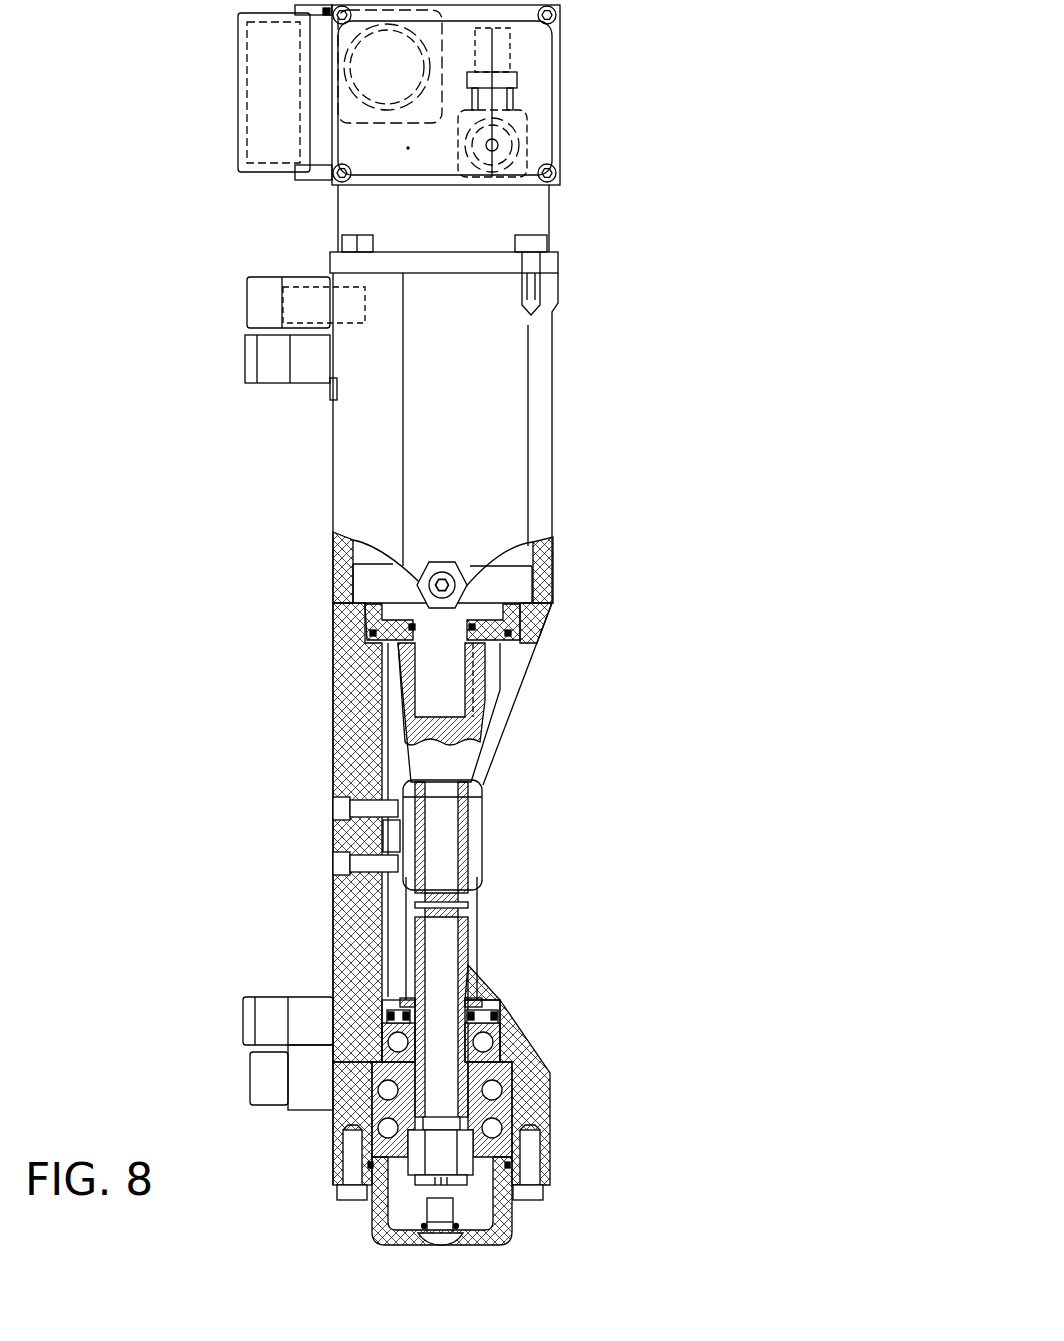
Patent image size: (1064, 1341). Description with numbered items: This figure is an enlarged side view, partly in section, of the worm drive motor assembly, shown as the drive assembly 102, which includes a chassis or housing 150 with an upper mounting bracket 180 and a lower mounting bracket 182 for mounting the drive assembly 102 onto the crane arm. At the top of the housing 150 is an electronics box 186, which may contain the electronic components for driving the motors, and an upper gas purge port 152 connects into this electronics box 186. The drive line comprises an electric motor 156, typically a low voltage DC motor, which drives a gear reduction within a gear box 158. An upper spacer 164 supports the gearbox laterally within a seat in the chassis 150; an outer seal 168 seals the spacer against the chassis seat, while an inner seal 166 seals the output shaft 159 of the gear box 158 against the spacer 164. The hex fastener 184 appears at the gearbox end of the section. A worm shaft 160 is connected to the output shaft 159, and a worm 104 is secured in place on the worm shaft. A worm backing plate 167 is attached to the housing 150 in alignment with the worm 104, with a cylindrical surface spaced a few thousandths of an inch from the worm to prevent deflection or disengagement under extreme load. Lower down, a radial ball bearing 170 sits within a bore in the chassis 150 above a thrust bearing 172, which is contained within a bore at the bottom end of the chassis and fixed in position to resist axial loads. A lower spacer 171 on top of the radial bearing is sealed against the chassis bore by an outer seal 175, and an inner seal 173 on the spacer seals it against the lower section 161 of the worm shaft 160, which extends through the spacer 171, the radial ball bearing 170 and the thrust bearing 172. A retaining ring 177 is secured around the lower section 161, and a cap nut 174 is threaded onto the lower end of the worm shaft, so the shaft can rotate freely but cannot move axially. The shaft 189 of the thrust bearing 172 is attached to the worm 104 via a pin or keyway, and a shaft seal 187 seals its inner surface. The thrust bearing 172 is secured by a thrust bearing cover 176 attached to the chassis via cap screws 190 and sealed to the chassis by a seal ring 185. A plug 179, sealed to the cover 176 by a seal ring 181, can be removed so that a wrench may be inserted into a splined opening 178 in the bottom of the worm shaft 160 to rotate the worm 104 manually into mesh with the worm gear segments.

The drive assembly 102 is at (590, 297).
The worm 104 is at (474, 820).
The chassis or housing 150 is at (543, 395).
The upper gas purge port 152 is at (493, 58).
The electric motor 156 is at (520, 558).
The gear box 158 is at (515, 587).
The output shaft 159 is at (432, 662).
The worm shaft 160 is at (465, 740).
The lower section of the worm shaft 161 is at (414, 993).
The upper spacer 164 is at (513, 617).
The inner seal 166 is at (472, 628).
The worm backing plate 167 is at (392, 838).
The outer seal 168 is at (513, 637).
The radial ball bearing 170 is at (492, 1028).
The lower spacer 171 is at (492, 1023).
The thrust bearing 172 is at (505, 1072).
The inner seal 173 is at (486, 1018).
The cap nut 174 is at (463, 1147).
The outer seal 175 is at (503, 1020).
The thrust bearing cover 176 is at (497, 1220).
The retaining ring 177 is at (472, 1010).
The splined opening 178 is at (437, 1178).
The plug 179 is at (442, 1238).
The upper mounting bracket 180 is at (270, 368).
The seal ring 181 is at (423, 1223).
The lower mounting bracket 182 is at (277, 1018).
The hex nut 184 is at (443, 580).
The seal ring 185 is at (550, 1175).
The electronics box 186 is at (372, 140).
The shaft seal 187 is at (420, 930).
The shaft of the thrust bearing 189 is at (470, 962).
The cap screws 190 is at (530, 1160).